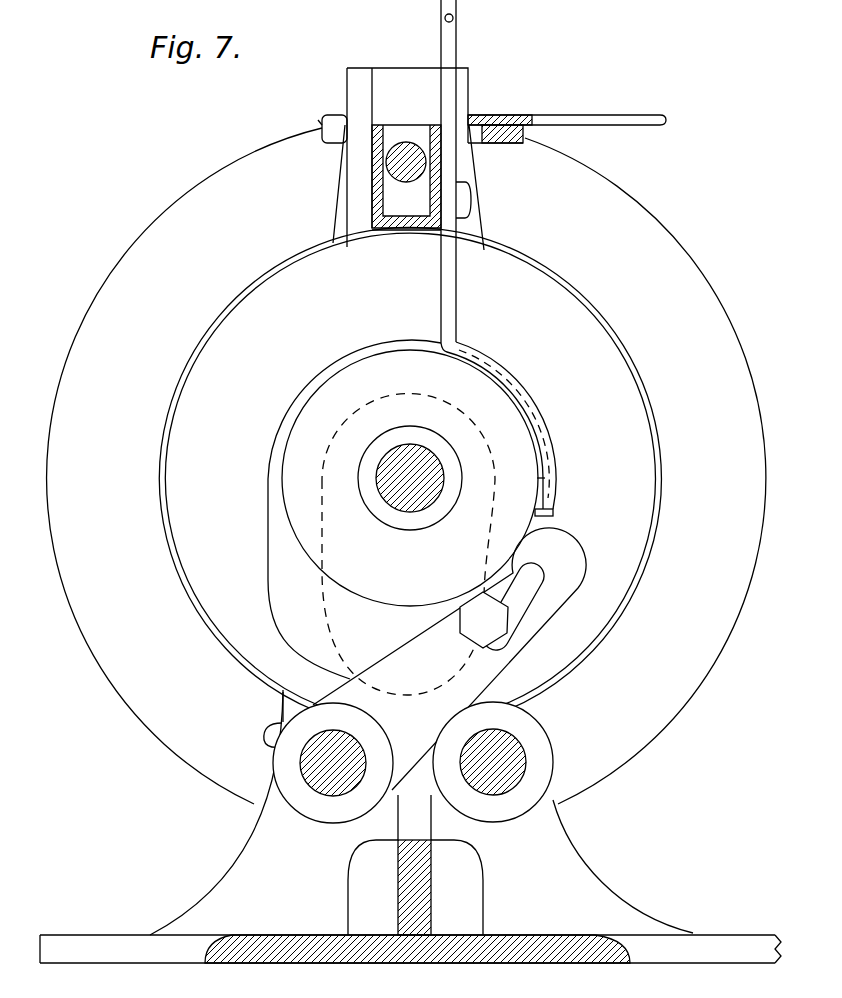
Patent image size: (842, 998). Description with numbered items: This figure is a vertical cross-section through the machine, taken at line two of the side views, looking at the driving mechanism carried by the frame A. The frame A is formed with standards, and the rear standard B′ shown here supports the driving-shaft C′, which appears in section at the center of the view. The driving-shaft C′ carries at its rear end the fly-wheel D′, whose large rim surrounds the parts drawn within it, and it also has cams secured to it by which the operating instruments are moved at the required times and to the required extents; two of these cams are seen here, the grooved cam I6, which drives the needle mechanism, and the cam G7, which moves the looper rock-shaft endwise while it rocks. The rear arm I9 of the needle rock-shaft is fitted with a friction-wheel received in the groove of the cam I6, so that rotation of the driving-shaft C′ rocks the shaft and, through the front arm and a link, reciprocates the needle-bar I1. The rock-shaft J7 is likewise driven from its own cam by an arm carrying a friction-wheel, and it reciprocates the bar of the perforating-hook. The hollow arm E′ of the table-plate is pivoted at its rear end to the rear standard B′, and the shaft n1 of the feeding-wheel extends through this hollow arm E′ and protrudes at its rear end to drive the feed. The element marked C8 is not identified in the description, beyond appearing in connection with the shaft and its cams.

The frame A is at (258, 912).
The rear standard B′ is at (492, 501).
The fly-wheel D′ is at (406, 466).
The arm of the table-plate E′ is at (406, 176).
The feed-wheel shaft n1 is at (406, 153).
The grooved cam I6 is at (387, 478).
The cam G7 is at (415, 545).
The driving-shaft C′ is at (410, 478).
The rod and band C8 is at (412, 339).
The rear arm of the rock-shaft I9 is at (449, 659).
The needle-bar I1 is at (333, 763).
The rock-shaft J7 is at (493, 762).